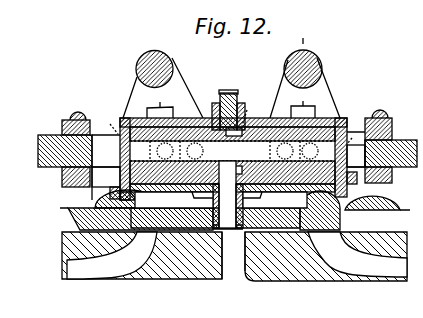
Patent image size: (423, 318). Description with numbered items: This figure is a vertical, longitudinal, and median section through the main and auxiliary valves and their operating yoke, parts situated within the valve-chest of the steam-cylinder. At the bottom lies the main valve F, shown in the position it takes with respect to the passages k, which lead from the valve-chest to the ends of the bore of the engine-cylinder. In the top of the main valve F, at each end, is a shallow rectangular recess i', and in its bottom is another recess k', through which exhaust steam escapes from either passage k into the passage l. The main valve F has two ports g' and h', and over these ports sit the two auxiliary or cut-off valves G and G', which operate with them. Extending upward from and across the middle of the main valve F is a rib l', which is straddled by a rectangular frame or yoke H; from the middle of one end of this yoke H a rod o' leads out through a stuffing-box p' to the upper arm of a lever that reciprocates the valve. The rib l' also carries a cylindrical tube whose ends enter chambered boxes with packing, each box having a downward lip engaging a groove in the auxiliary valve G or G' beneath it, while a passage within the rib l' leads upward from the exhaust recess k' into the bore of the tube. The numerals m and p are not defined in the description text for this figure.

The passage k is at (234, 256).
The passage l is at (264, 151).
The port g' is at (140, 219).
The main valve F is at (215, 218).
The recess k' is at (228, 222).
The port h' is at (320, 210).
The auxiliary or cut-off valve G is at (120, 199).
The auxiliary or cut-off valve G' is at (372, 199).
The shallow rectangular recess i' is at (235, 200).
The rib l' is at (249, 110).
The rod o' is at (65, 151).
The rectangular frame or yoke H is at (235, 155).
The hub block m is at (391, 153).
The stuffing-box p' is at (108, 123).
The plate p is at (354, 140).